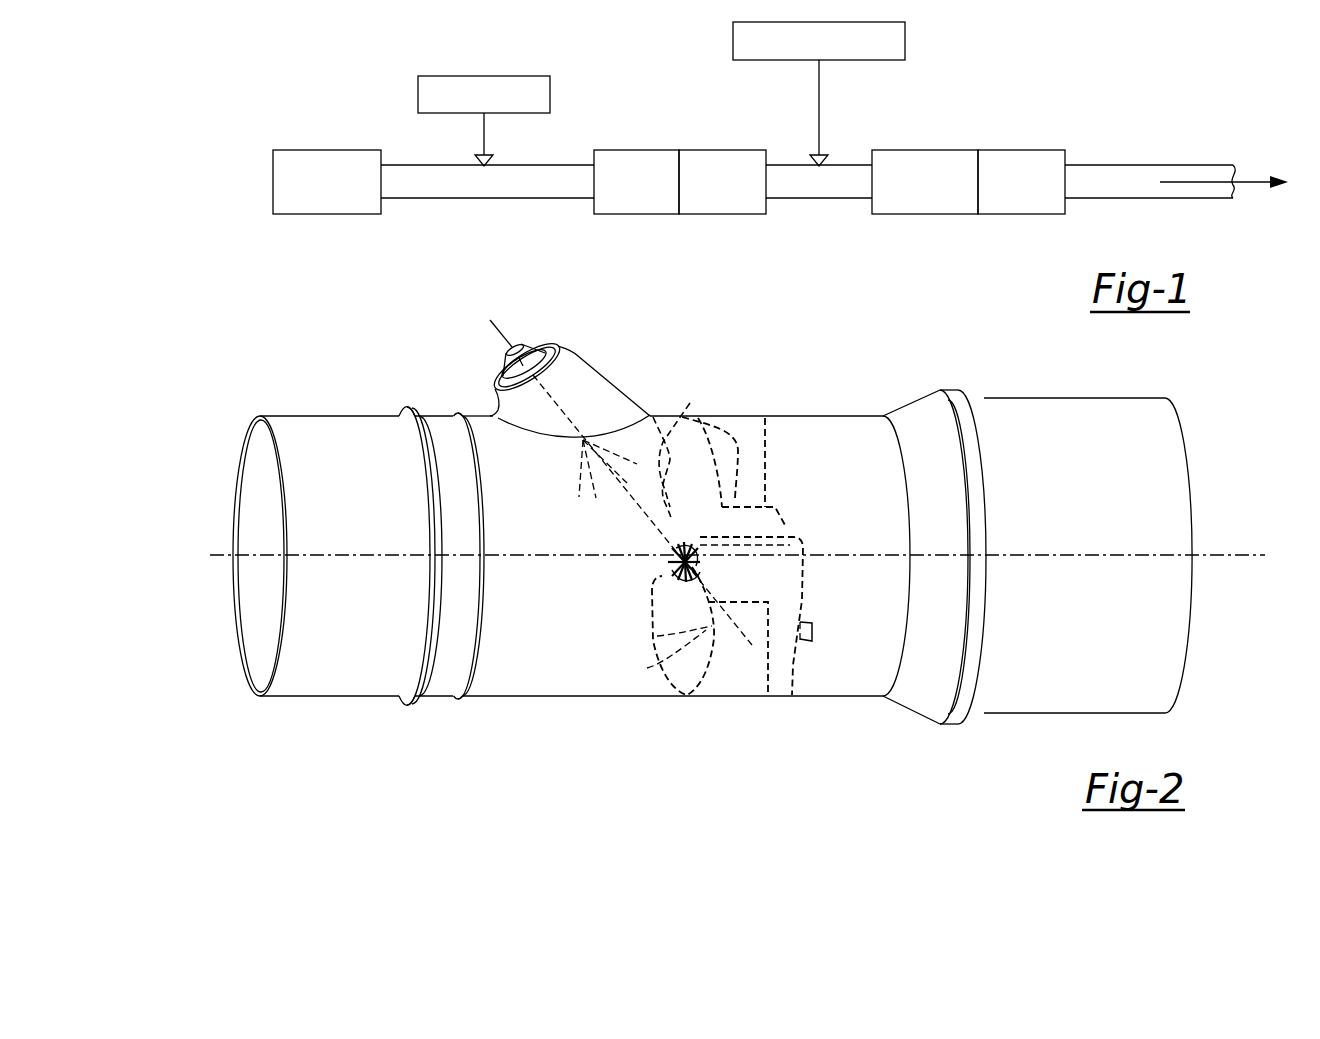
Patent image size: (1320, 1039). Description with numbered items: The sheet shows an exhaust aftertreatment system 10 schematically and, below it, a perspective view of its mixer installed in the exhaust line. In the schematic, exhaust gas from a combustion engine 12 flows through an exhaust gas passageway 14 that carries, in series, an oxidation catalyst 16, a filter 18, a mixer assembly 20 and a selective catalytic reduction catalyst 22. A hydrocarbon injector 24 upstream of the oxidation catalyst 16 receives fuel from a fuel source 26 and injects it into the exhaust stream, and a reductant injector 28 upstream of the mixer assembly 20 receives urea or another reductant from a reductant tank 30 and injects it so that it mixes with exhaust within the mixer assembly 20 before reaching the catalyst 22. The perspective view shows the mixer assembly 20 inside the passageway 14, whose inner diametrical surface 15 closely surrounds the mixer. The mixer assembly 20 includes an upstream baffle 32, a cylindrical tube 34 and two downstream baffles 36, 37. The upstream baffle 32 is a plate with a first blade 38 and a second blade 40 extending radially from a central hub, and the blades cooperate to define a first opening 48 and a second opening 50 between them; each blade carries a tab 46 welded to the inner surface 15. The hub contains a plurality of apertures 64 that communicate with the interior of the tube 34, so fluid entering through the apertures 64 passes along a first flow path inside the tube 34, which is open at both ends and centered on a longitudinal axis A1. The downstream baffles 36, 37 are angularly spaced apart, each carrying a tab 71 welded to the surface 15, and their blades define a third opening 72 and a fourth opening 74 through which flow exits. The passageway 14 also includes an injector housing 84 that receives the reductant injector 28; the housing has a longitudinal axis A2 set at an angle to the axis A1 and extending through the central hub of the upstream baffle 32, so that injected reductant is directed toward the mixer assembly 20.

In FIG. 1, the exhaust aftertreatment system 10 is at (612, 64).
In FIG. 1, the combustion engine 12 is at (328, 150).
In FIG. 1, the exhaust gas passageway 14 is at (575, 198).
In FIG. 2, the exhaust gas passageway 14 is at (495, 690).
In FIG. 2, the inner diametrical surface 15 is at (818, 417).
In FIG. 1, the oxidation catalyst 16 is at (636, 150).
In FIG. 1, the filter 18 is at (722, 150).
In FIG. 1, the mixer assembly 20 is at (972, 214).
In FIG. 2, the mixer assembly 20 is at (658, 690).
In FIG. 1, the selective catalytic reduction catalyst 22 is at (1022, 150).
In FIG. 1, the hydrocarbon injector 24 is at (491, 161).
In FIG. 1, the fuel source 26 is at (418, 96).
In FIG. 1, the reductant injector 28 is at (816, 158).
In FIG. 1, the reductant tank 30 is at (733, 38).
In FIG. 2, the upstream baffle 32 is at (638, 606).
In FIG. 2, the cylindrical tube 34 is at (776, 526).
In FIG. 2, the downstream baffle 36 is at (746, 412).
In FIG. 2, the downstream baffle 37 is at (818, 591).
In FIG. 2, the first blade 38 is at (682, 416).
In FIG. 2, the second blade 40 is at (657, 636).
In FIG. 2, the tab 46 is at (764, 467).
In FIG. 2, the first opening 48 is at (652, 400).
In FIG. 2, the second opening 50 is at (647, 668).
In FIG. 2, the apertures 64 is at (652, 579).
In FIG. 2, the tab 71 is at (812, 638).
In FIG. 2, the third opening 72 is at (745, 435).
In FIG. 2, the fourth opening 74 is at (790, 695).
In FIG. 2, the injector housing 84 is at (582, 368).
In FIG. 2, the longitudinal axis A1 is at (1222, 555).
In FIG. 2, the longitudinal axis A2 is at (488, 326).